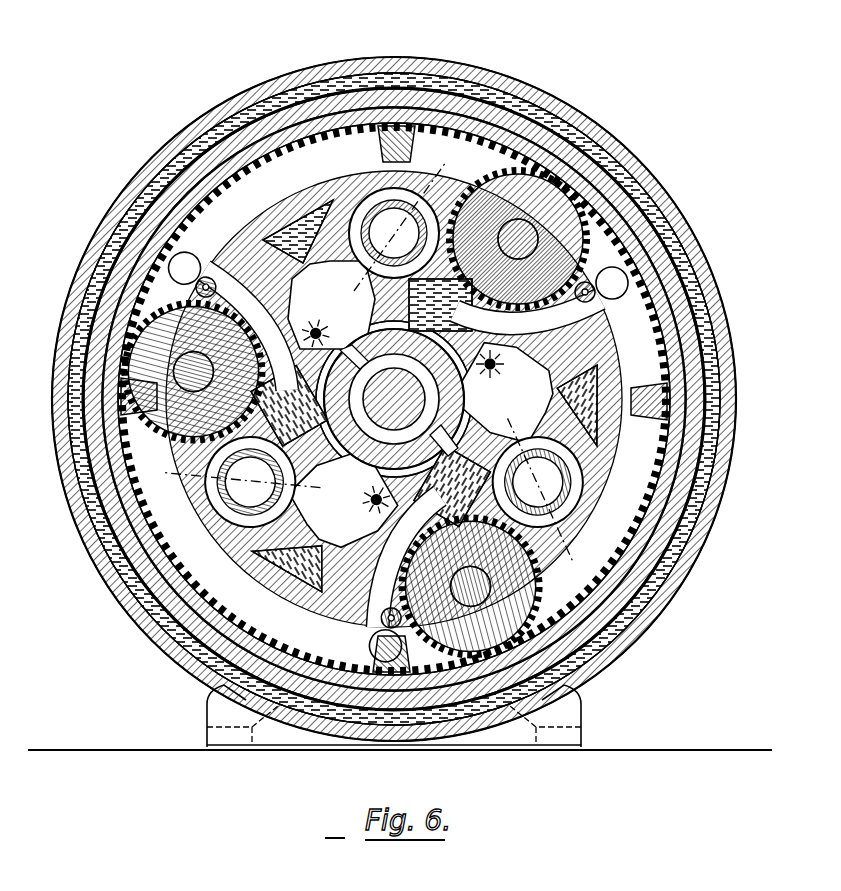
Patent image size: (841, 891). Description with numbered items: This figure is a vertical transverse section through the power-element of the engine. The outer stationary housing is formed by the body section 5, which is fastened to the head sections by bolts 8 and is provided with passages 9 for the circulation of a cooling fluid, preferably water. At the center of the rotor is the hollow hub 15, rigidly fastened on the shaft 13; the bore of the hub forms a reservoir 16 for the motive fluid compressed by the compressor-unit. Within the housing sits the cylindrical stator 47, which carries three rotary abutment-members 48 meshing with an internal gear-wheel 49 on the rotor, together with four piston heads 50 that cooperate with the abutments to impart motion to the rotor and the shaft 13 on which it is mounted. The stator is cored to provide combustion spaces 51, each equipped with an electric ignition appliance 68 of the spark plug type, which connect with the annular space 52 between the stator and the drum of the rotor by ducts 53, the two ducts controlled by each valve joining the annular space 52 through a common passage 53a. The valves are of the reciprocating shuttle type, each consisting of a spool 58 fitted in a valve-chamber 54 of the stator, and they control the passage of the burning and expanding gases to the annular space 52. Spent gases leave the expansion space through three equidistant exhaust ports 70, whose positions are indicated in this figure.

The body section 5 is at (85, 282).
The bolts 8 is at (412, 380).
The passages 9 is at (102, 232).
The shaft 13 is at (394, 399).
The hollow hub 15 is at (394, 399).
The reservoir 16 is at (394, 399).
The cylindrical stator 47 is at (215, 547).
The rotary abutment-members 48 is at (127, 337).
The internal gear-wheel 49 is at (222, 172).
The piston heads 50 is at (97, 420).
The combustion spaces 51 is at (406, 405).
The annular space 52 is at (298, 168).
The ducts 53 is at (316, 482).
The common passage 53a is at (205, 480).
The valve-chambers 54 is at (424, 416).
The spool 58 is at (470, 185).
The electric ignition appliance 68 is at (503, 352).
The exhaust ports 70 is at (188, 257).